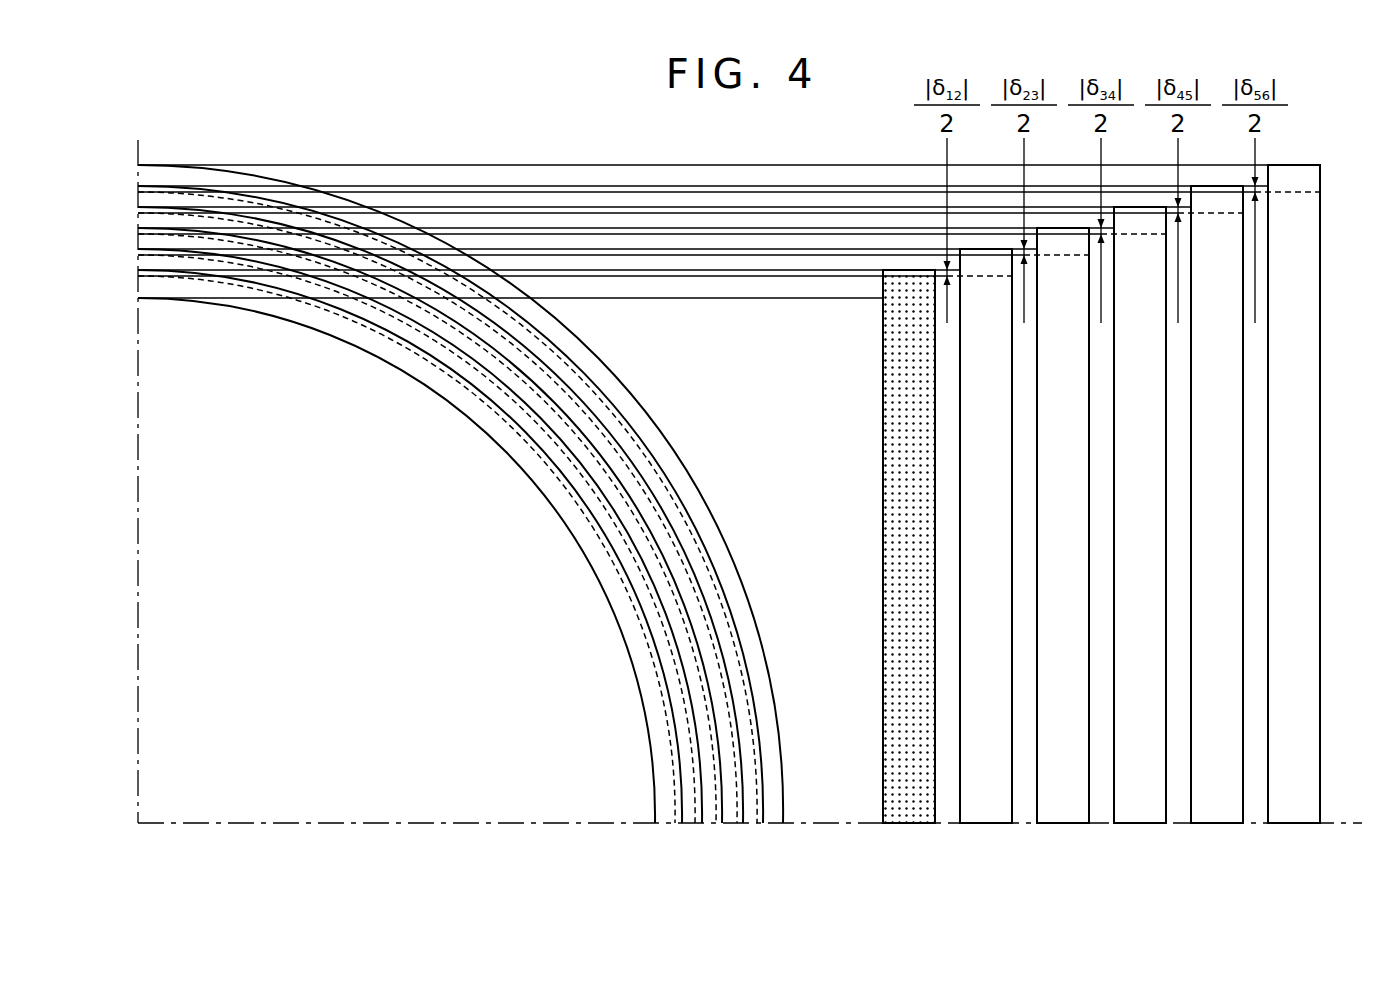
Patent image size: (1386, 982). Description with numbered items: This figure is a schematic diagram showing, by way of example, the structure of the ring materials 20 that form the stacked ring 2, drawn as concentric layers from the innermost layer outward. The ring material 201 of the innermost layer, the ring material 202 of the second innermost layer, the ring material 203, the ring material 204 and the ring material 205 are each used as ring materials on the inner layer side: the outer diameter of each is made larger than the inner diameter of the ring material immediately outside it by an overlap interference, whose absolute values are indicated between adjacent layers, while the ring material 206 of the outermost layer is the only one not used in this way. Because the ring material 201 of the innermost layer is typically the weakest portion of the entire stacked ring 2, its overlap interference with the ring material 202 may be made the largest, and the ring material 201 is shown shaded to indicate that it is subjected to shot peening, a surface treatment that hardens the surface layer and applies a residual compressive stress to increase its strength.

The stacked ring 2 is at (685, 459).
The ring materials 20 is at (1106, 527).
The ring material of the innermost layer 201 is at (911, 825).
The ring material of the second innermost layer 202 is at (988, 825).
The ring material of the third layer 203 is at (1065, 825).
The ring material of the fourth layer 204 is at (1142, 825).
The ring material of the fifth layer 205 is at (1219, 825).
The ring material of the outermost layer 206 is at (1296, 825).